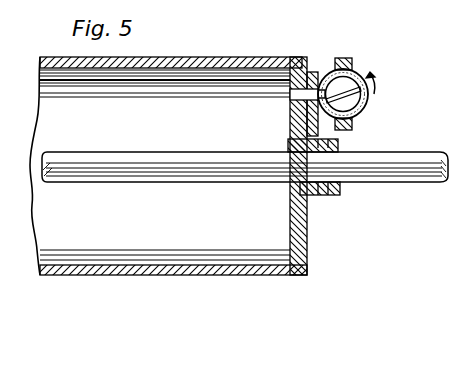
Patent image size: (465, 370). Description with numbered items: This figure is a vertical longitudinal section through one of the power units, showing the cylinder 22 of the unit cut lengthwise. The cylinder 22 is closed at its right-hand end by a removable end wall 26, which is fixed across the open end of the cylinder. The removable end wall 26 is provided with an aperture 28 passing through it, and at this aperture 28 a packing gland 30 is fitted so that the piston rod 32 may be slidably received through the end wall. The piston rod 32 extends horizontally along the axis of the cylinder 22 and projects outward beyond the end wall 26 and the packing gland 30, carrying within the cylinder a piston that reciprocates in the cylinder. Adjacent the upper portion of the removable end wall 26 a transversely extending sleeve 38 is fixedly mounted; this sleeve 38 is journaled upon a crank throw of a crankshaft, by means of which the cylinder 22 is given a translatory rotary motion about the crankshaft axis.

The cylinder 22 is at (222, 57).
The removable end wall 26 is at (308, 238).
The aperture 28 is at (292, 186).
The packing gland 30 is at (337, 193).
The piston rod 32 is at (187, 165).
The sleeve 38 is at (365, 109).